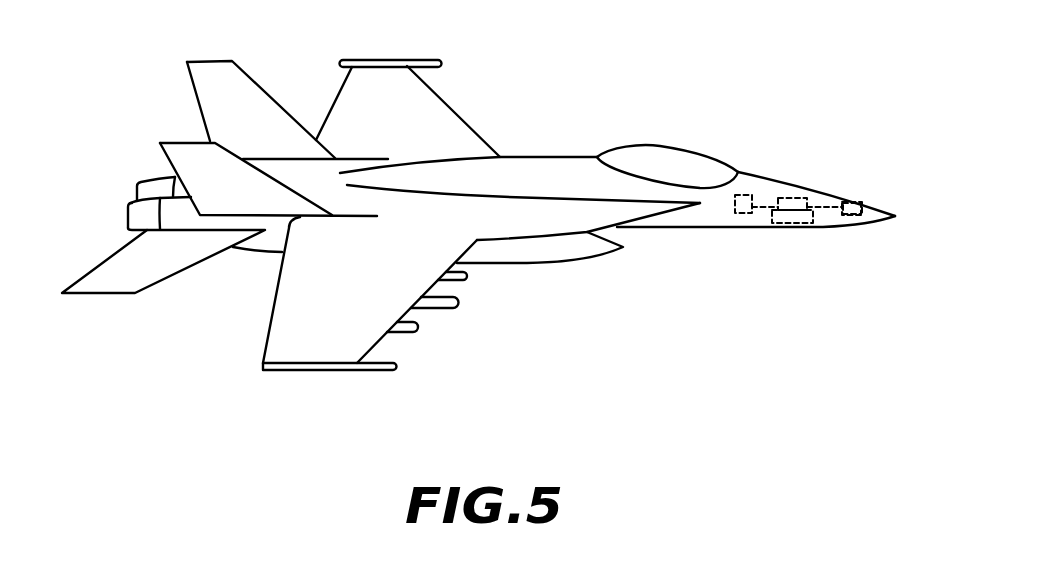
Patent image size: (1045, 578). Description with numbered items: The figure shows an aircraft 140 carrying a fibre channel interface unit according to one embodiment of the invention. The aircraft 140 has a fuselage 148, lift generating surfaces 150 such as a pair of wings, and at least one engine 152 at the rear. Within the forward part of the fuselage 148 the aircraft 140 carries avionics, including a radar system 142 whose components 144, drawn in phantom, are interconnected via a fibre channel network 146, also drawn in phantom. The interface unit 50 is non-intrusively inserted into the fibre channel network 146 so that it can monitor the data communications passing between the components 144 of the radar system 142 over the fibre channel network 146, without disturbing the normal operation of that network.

The interface unit 50 is at (790, 225).
The aircraft 140 is at (488, 205).
The radar system 142 is at (860, 200).
The components 144 is at (745, 192).
The fibre channel network 146 is at (793, 193).
The fuselage 148 is at (522, 172).
The lift generating surfaces 150 is at (473, 92).
The engine 152 is at (102, 183).